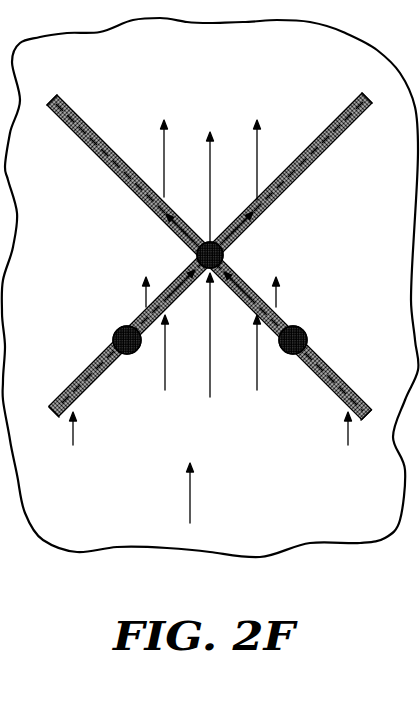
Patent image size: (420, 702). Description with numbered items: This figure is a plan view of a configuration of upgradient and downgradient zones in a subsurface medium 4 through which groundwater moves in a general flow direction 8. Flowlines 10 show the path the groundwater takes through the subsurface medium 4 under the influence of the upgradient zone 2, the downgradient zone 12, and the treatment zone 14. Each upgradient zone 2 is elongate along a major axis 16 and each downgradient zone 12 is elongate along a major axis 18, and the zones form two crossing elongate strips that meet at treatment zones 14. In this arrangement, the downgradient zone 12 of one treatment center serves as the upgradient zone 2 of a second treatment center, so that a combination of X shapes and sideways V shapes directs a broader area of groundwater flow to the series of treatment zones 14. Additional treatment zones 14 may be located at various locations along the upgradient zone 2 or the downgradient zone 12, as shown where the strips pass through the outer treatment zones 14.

The upgradient zone 2 is at (83, 372).
The subsurface medium 4 is at (128, 74).
The general flow direction 8 is at (190, 505).
The flowlines 10 is at (165, 142).
The downgradient zone 12 is at (117, 174).
The treatment zone 14 is at (224, 253).
The major axis of upgradient zone 16 is at (42, 422).
The major axis of downgradient zone 18 is at (47, 91).